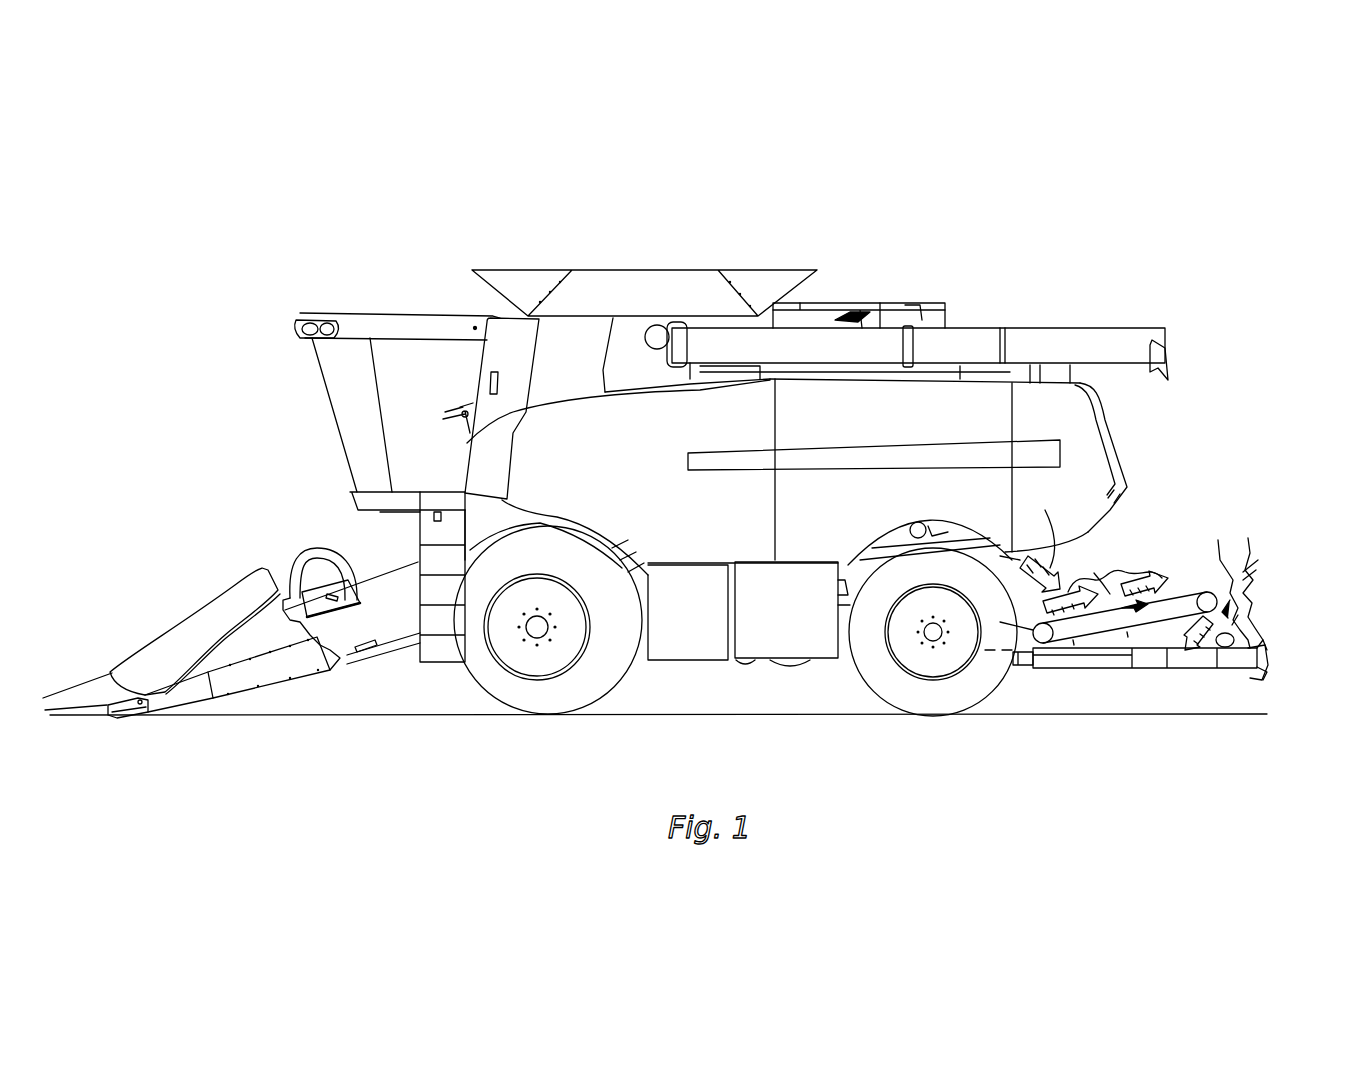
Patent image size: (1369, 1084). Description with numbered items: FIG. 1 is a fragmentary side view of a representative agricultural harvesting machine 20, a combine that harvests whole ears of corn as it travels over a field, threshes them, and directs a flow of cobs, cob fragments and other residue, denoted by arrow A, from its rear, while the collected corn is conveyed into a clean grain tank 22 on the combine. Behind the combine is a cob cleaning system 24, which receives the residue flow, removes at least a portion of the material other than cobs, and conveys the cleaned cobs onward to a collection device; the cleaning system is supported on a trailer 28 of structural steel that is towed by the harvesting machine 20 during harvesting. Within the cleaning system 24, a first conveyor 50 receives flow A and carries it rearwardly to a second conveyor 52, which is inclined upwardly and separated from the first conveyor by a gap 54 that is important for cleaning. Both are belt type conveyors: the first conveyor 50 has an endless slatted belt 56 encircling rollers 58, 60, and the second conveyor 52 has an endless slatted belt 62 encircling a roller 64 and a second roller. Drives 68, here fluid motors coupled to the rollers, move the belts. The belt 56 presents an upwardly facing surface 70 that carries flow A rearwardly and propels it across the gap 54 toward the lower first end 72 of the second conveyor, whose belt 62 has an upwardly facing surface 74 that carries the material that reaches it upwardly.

The agricultural harvesting machine 20 is at (1113, 268).
The clean grain tank 22 is at (757, 268).
The cob cleaning system 24 is at (1150, 578).
The trailer 28 is at (1110, 670).
The first conveyor 50 is at (1086, 680).
The endless slatted belt 56 is at (1067, 650).
The roller 58 is at (1033, 630).
The gap 54 is at (1195, 620).
The roller 64 is at (1222, 647).
The roller 60 is at (1231, 570).
The drive 68 is at (1225, 585).
The upwardly facing surface 70 is at (1187, 590).
The lower first end 72 is at (1289, 574).
The upwardly facing surface 74 is at (1243, 572).
The second conveyor 52 is at (1284, 701).
The endless slatted belt 62 is at (1262, 650).